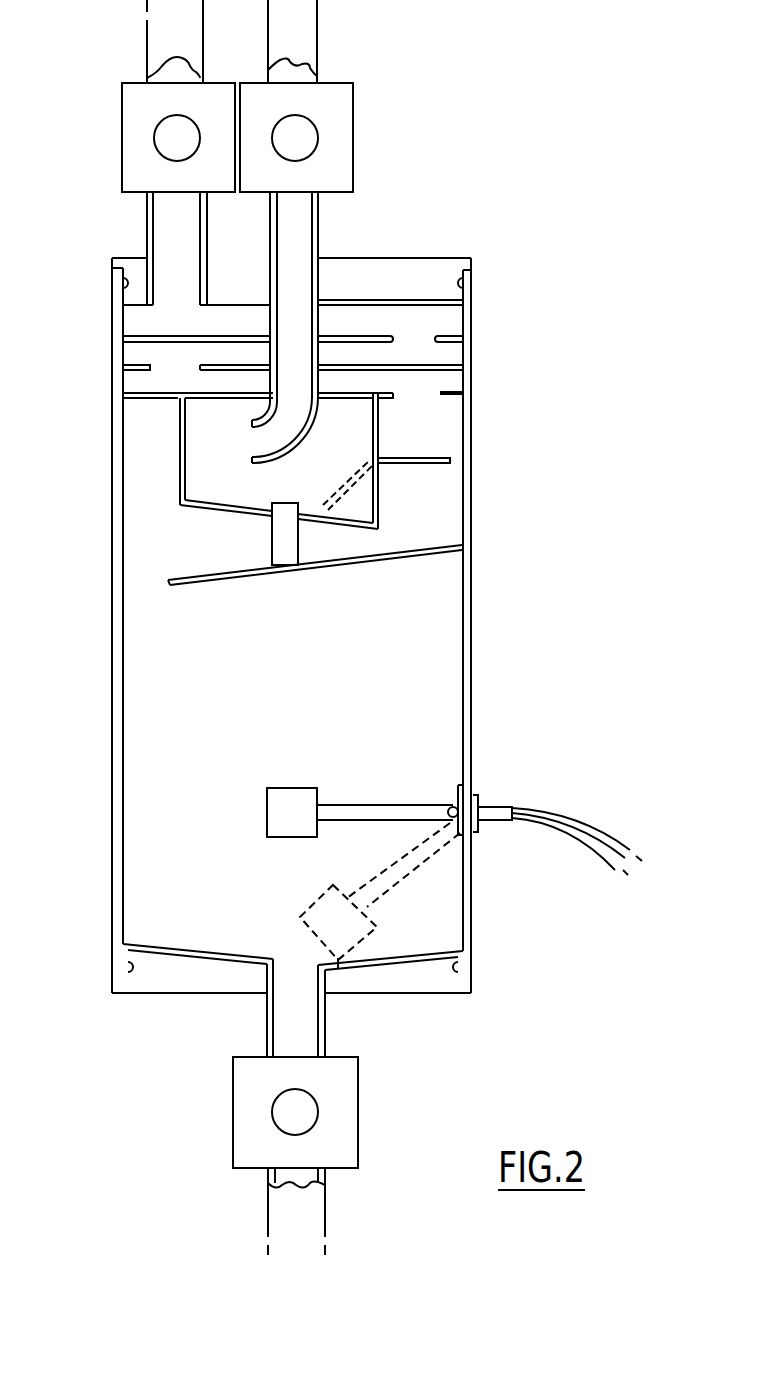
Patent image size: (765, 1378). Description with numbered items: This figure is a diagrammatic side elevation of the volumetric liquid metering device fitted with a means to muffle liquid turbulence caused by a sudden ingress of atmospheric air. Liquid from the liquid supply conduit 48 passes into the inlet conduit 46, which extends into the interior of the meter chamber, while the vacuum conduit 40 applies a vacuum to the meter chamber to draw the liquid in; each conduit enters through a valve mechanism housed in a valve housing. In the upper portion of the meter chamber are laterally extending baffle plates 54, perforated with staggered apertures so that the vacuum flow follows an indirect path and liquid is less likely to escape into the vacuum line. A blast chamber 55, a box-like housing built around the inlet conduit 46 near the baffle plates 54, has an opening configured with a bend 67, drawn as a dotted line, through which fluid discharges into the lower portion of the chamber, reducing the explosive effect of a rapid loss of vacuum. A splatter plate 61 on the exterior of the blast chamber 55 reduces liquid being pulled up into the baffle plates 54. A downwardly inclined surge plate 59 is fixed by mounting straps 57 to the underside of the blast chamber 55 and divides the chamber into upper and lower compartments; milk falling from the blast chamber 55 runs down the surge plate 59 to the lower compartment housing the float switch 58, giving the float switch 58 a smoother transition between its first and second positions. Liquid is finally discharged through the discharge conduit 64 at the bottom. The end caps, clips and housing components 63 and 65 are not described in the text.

The vacuum conduit 40 is at (167, 42).
The liquid supply conduit 48 is at (297, 38).
The inlet conduit 46 is at (293, 230).
The housing end cap 63 is at (382, 255).
The clip 65 is at (471, 283).
The baffle plates 54 is at (470, 337).
The blast chamber 55 is at (185, 447).
The mounting straps 57 is at (285, 543).
The splatter plate 61 is at (471, 460).
The bend 67 is at (347, 490).
The surge plate 59 is at (402, 561).
The float switch 58 is at (327, 913).
The discharge conduit 64 is at (302, 1203).